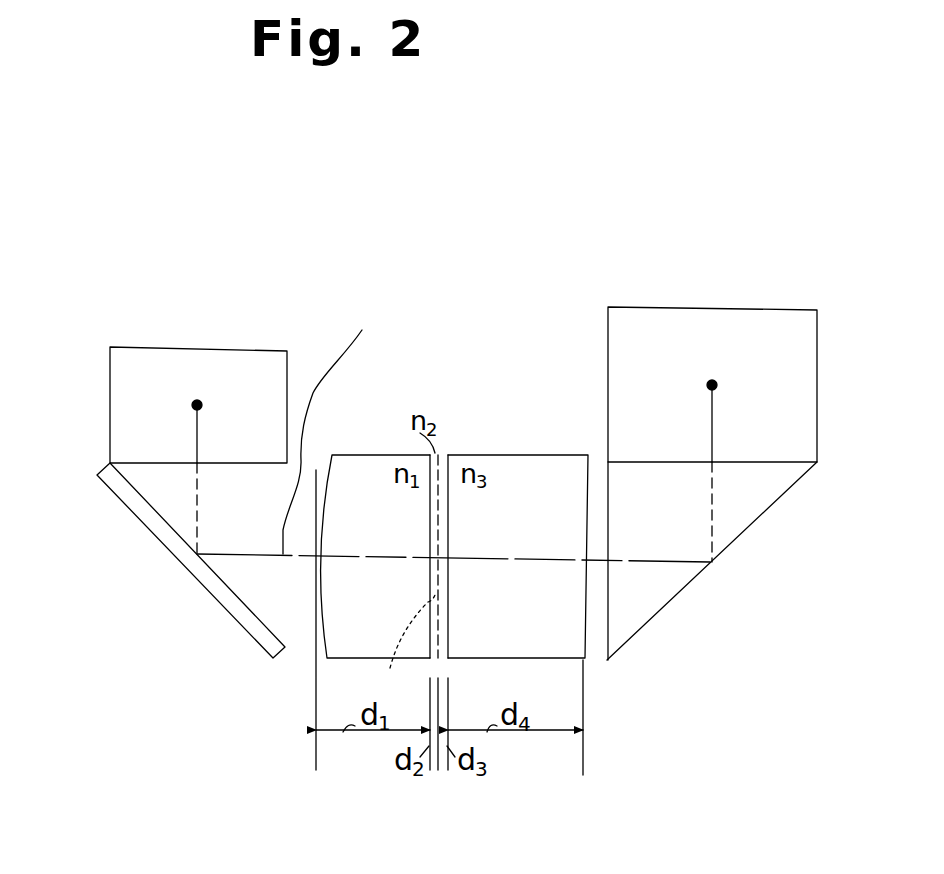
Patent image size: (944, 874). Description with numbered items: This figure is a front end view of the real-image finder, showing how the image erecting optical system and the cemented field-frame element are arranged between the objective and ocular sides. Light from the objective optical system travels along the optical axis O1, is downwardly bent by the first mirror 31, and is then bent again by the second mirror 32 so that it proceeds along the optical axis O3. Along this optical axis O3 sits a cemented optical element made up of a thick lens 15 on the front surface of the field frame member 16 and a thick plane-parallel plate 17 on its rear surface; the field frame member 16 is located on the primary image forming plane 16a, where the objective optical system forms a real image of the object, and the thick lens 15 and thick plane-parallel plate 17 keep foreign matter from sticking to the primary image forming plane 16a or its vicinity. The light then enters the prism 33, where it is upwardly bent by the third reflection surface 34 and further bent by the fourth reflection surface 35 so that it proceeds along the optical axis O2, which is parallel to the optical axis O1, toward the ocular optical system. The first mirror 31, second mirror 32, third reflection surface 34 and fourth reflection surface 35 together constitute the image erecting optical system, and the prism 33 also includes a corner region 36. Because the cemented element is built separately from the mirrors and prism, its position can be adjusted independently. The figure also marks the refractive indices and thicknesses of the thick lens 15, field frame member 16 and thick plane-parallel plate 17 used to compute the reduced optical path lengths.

The thick lens 15 is at (359, 465).
The field frame member 16 is at (440, 453).
The thick plane-parallel plate 17 is at (537, 468).
The primary image forming plane 16a is at (393, 644).
The first mirror 31 is at (267, 360).
The second mirror 32 is at (250, 622).
The prism 33 is at (745, 532).
The third reflection surface 34 is at (682, 594).
The fourth reflection surface 35 is at (623, 342).
The prism corner 36 is at (607, 660).
The optical axis of objective optical system O1 is at (184, 406).
The optical axis of ocular optical system O2 is at (722, 387).
The optical axis O3 is at (338, 415).